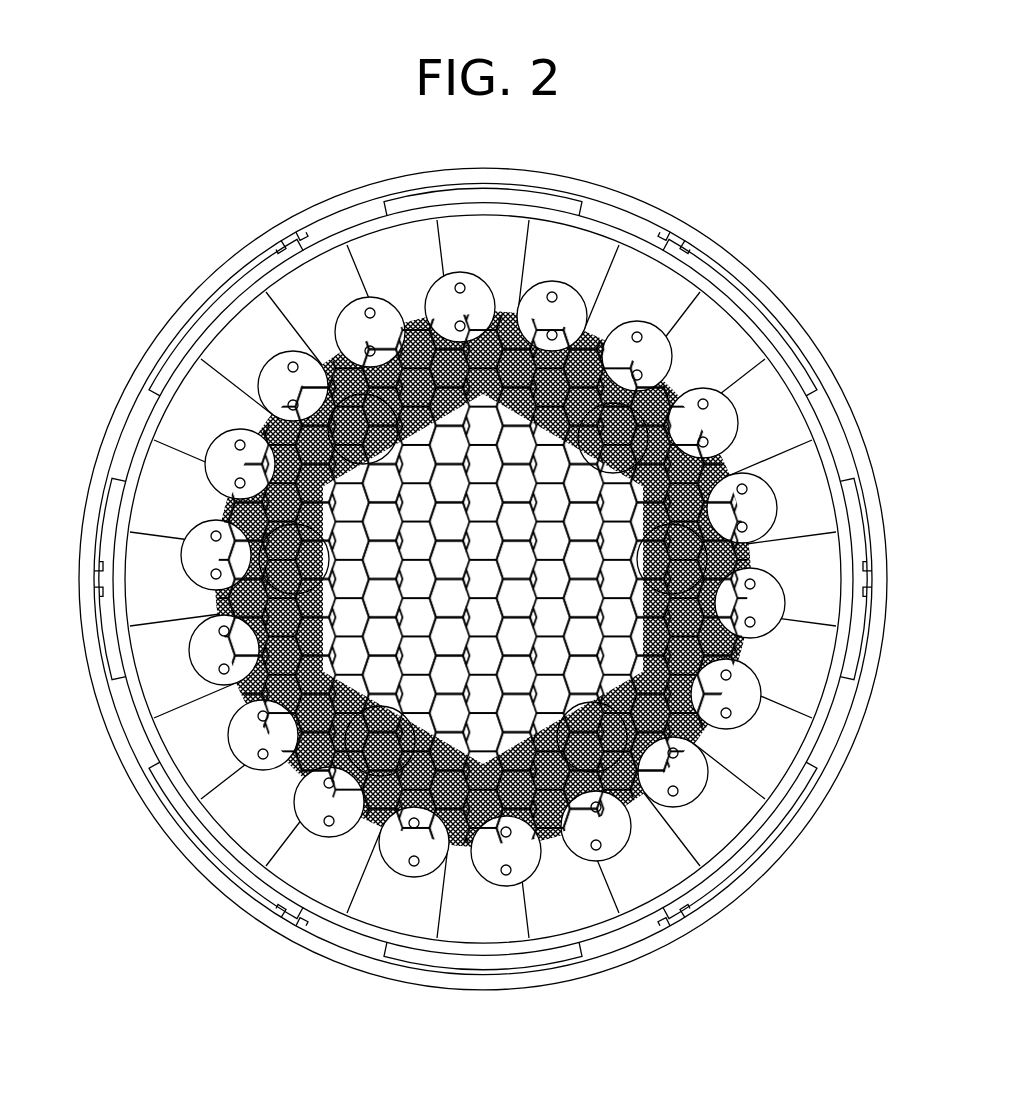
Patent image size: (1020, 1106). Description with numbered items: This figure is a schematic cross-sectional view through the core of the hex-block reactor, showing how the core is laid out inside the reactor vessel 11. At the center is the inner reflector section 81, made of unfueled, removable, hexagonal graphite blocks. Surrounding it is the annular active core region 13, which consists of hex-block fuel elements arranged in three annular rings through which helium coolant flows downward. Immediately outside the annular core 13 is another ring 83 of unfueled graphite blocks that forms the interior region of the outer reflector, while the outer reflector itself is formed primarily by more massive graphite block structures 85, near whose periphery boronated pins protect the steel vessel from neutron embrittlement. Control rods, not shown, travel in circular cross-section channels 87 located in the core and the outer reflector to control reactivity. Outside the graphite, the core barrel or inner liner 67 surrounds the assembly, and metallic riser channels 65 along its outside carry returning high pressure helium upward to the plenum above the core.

The reactor vessel 11 is at (167, 323).
The reactor core 13 is at (740, 460).
The metallic riser channels 65 is at (128, 718).
The core barrel 67 is at (135, 540).
The central reflector section 81 is at (293, 367).
The ring of unfueled graphite blocks 83 is at (685, 370).
The outer reflector graphite block structures 85 is at (580, 250).
The control rod channels 87 is at (650, 820).